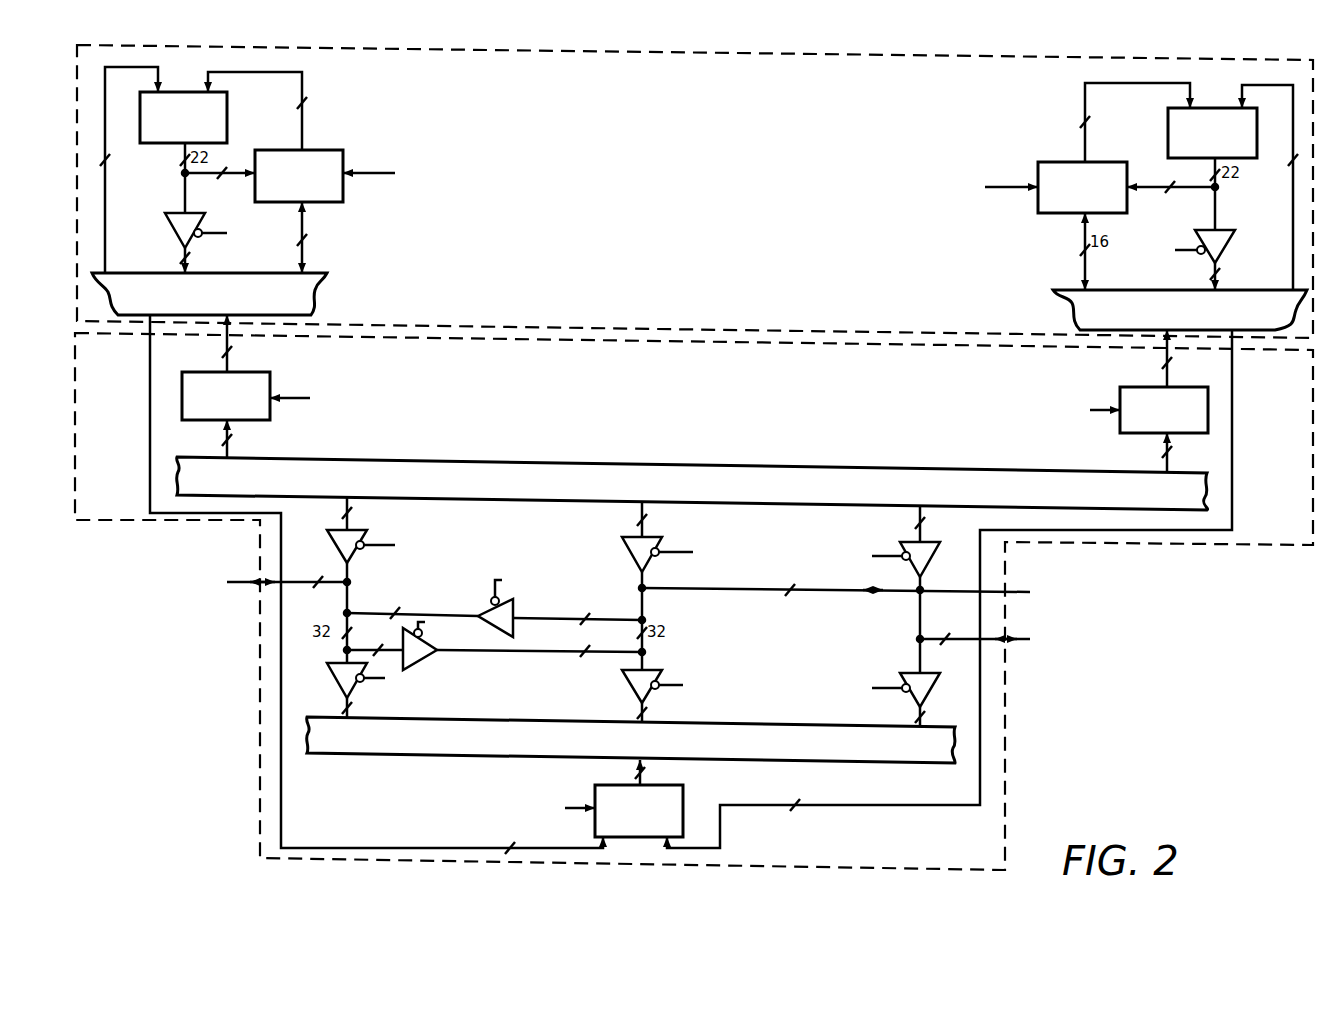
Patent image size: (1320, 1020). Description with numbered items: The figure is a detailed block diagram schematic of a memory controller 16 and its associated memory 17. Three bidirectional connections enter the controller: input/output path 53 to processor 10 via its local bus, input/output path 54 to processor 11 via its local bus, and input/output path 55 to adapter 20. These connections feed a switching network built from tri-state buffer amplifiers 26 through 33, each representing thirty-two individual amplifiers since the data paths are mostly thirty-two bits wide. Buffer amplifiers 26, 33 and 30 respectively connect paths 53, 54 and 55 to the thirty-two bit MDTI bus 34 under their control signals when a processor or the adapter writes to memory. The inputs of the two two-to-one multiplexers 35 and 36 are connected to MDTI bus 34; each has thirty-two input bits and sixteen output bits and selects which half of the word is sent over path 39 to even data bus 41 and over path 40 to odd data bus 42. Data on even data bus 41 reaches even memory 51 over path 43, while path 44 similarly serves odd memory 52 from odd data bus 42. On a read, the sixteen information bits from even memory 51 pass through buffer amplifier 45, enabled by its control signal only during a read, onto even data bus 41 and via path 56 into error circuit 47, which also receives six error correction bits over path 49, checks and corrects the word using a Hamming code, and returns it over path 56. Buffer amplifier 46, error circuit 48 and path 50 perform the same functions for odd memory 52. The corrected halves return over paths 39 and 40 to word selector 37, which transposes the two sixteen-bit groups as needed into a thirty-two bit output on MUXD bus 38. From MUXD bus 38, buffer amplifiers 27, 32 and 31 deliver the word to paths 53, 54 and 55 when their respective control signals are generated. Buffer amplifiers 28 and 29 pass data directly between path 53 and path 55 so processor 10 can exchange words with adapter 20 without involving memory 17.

The memory 17 is at (695, 191).
The memory controller 16 is at (694, 601).
The even memory 51 is at (228, 105).
The odd memory 52 is at (1166, 120).
The path 43 is at (118, 138).
The path 44 is at (1292, 222).
The error correction bit path 49 is at (302, 92).
The error correction bit path 50 is at (1082, 104).
The error circuit 47 is at (322, 150).
The error circuit 48 is at (1053, 162).
The buffer amplifier 45 is at (167, 213).
The buffer amplifier 46 is at (1232, 244).
The path 56 is at (303, 262).
The even data bus 41 is at (316, 298).
The odd data bus 42 is at (1050, 299).
The path 39 is at (150, 378).
The path 40 is at (1238, 412).
The 2:1 multiplexer 35 is at (260, 372).
The 2:1 multiplexer 36 is at (1125, 387).
The MDTI bus 34 is at (680, 463).
The buffer amplifier 26 is at (331, 540).
The buffer amplifier 27 is at (331, 680).
The buffer amplifier 28 is at (426, 658).
The buffer amplifier 29 is at (514, 606).
The buffer amplifier 30 is at (622, 563).
The buffer amplifier 31 is at (625, 690).
The buffer amplifier 33 is at (933, 553).
The buffer amplifier 32 is at (927, 686).
The MUXD bus 38 is at (468, 757).
The word selector 37 is at (593, 785).
The input/output path 53 is at (219, 594).
The input/output path 54 is at (1043, 654).
The input/output path 55 is at (899, 585).
The processor 10 is at (237, 614).
The processor 11 is at (1022, 684).
The adapter 20 is at (1030, 574).